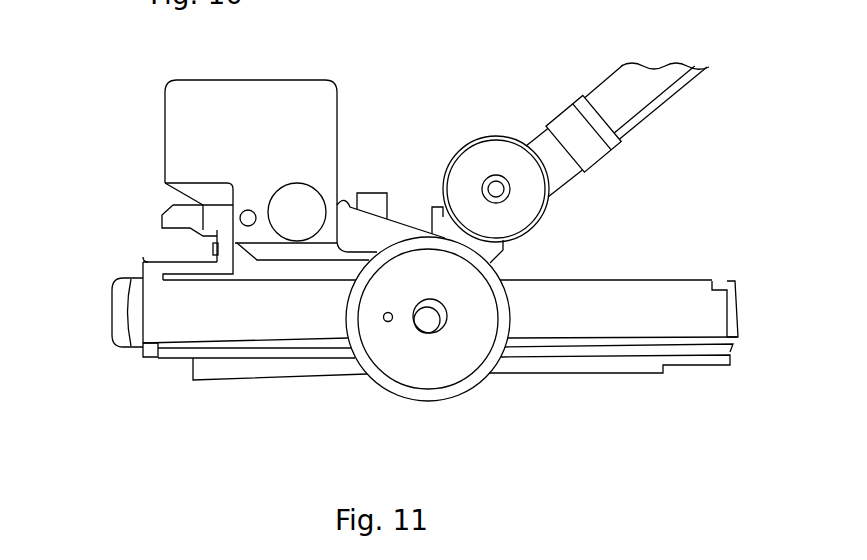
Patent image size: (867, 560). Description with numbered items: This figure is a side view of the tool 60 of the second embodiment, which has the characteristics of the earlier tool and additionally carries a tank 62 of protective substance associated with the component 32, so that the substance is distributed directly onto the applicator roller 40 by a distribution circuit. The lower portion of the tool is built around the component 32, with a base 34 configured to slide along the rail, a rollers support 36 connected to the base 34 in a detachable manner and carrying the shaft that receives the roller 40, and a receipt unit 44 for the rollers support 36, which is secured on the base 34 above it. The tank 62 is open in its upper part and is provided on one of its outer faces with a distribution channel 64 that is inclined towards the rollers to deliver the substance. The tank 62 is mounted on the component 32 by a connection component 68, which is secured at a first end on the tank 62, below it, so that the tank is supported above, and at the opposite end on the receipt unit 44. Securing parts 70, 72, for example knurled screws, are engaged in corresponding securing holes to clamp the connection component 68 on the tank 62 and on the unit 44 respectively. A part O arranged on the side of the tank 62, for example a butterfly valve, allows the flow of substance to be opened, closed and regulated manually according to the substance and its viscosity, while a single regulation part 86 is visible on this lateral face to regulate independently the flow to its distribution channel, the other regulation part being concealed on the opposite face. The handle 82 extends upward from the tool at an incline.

The component 32 is at (742, 303).
The base 34 is at (600, 357).
The rollers support 36 is at (712, 283).
The applicator roller 40 is at (465, 378).
The receipt unit 44 is at (250, 322).
The tool 60 is at (160, 393).
The tank 62 is at (325, 110).
The distribution channel 64 is at (400, 233).
The connection component 68 is at (143, 263).
The securing part 70 is at (217, 252).
The securing part 72 is at (120, 308).
The handle 82 is at (658, 108).
The regulation part 86 is at (292, 200).
The part O is at (173, 212).